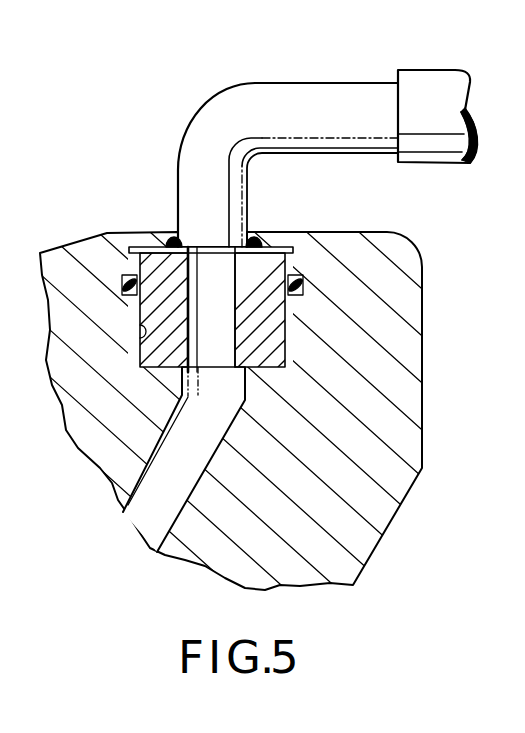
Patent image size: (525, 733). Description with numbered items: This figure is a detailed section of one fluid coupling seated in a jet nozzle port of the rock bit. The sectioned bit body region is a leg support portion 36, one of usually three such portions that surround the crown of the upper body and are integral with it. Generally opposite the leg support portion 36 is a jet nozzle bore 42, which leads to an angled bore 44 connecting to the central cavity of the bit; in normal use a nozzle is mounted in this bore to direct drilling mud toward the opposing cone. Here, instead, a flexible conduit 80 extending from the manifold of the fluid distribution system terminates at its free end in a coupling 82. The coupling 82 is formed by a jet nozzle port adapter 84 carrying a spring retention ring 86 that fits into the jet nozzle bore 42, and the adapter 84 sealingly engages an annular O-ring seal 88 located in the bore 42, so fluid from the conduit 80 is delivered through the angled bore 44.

The leg support portion 36 is at (410, 392).
The jet nozzle bore 42 is at (140, 325).
The angled bore 44 is at (153, 520).
The flexible conduit 80 is at (442, 88).
The coupling 82 is at (262, 95).
The jet nozzle port adapter 84 is at (272, 275).
The spring retention ring 86 is at (155, 250).
The annular O-ring seal 88 is at (127, 279).